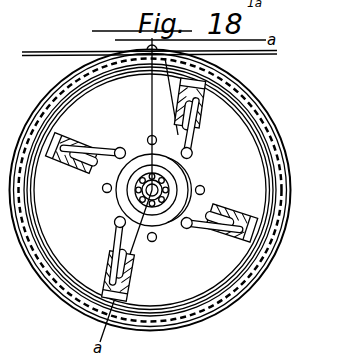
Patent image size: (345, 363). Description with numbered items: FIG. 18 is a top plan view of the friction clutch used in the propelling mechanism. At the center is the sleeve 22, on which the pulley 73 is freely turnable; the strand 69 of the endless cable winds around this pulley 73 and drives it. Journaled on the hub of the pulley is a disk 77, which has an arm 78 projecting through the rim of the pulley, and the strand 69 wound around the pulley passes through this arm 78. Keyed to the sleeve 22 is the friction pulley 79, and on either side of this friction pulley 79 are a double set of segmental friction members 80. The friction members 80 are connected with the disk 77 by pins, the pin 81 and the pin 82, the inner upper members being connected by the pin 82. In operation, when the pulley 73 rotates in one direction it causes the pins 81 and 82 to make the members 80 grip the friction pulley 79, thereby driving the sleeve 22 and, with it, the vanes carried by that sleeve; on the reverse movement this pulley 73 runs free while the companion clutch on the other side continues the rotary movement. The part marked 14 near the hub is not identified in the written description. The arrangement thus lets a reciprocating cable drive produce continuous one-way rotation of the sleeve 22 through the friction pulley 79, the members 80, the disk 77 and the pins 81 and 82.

The hub 14 is at (136, 222).
The sleeve 22 is at (142, 193).
The strand 69 is at (45, 55).
The pulley 73 is at (282, 163).
The disk 77 is at (176, 243).
The arm 78 is at (149, 99).
The friction pulley 79 is at (110, 266).
The segmental friction members 80 is at (255, 214).
The pin 81 is at (194, 113).
The pin 82 is at (231, 187).